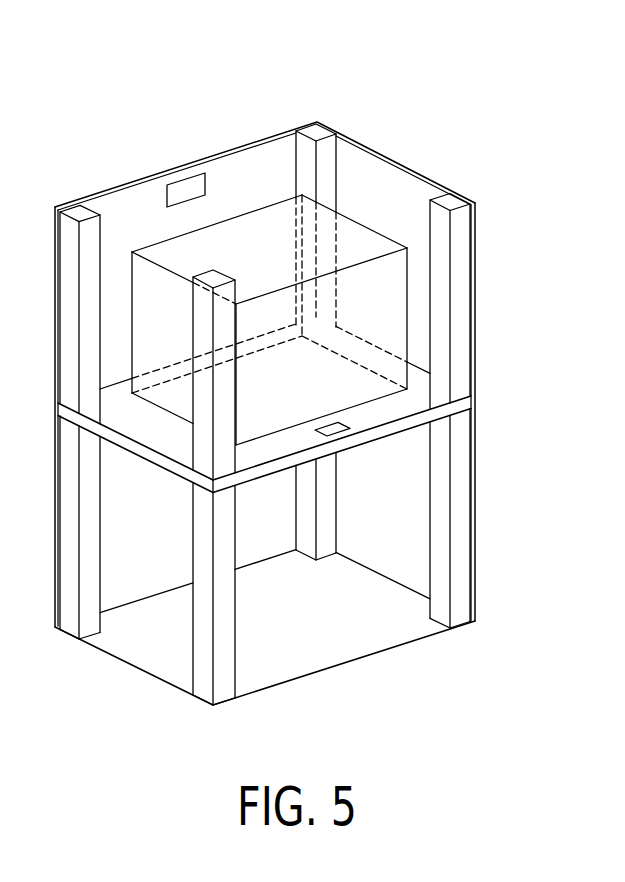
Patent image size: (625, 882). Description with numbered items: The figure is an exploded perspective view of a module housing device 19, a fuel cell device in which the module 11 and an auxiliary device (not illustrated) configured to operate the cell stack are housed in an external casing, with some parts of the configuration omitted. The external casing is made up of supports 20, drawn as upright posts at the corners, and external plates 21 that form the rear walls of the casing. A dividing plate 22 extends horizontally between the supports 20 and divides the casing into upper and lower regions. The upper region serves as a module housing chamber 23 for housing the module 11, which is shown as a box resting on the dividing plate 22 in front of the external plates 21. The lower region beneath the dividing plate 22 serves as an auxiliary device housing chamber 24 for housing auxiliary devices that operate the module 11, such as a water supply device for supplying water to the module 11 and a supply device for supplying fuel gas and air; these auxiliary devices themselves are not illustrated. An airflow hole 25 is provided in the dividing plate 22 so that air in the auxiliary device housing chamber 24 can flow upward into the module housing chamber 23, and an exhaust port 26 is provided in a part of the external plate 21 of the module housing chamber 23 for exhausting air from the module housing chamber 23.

The module housing device 19 is at (80, 44).
The module 11 is at (358, 240).
The support 20 is at (80, 210).
The external plate 21 is at (350, 137).
The dividing plate 22 is at (463, 402).
The module housing chamber 23 is at (368, 183).
The auxiliary device housing chamber 24 is at (133, 527).
The airflow hole 25 is at (350, 427).
The exhaust port 26 is at (180, 190).